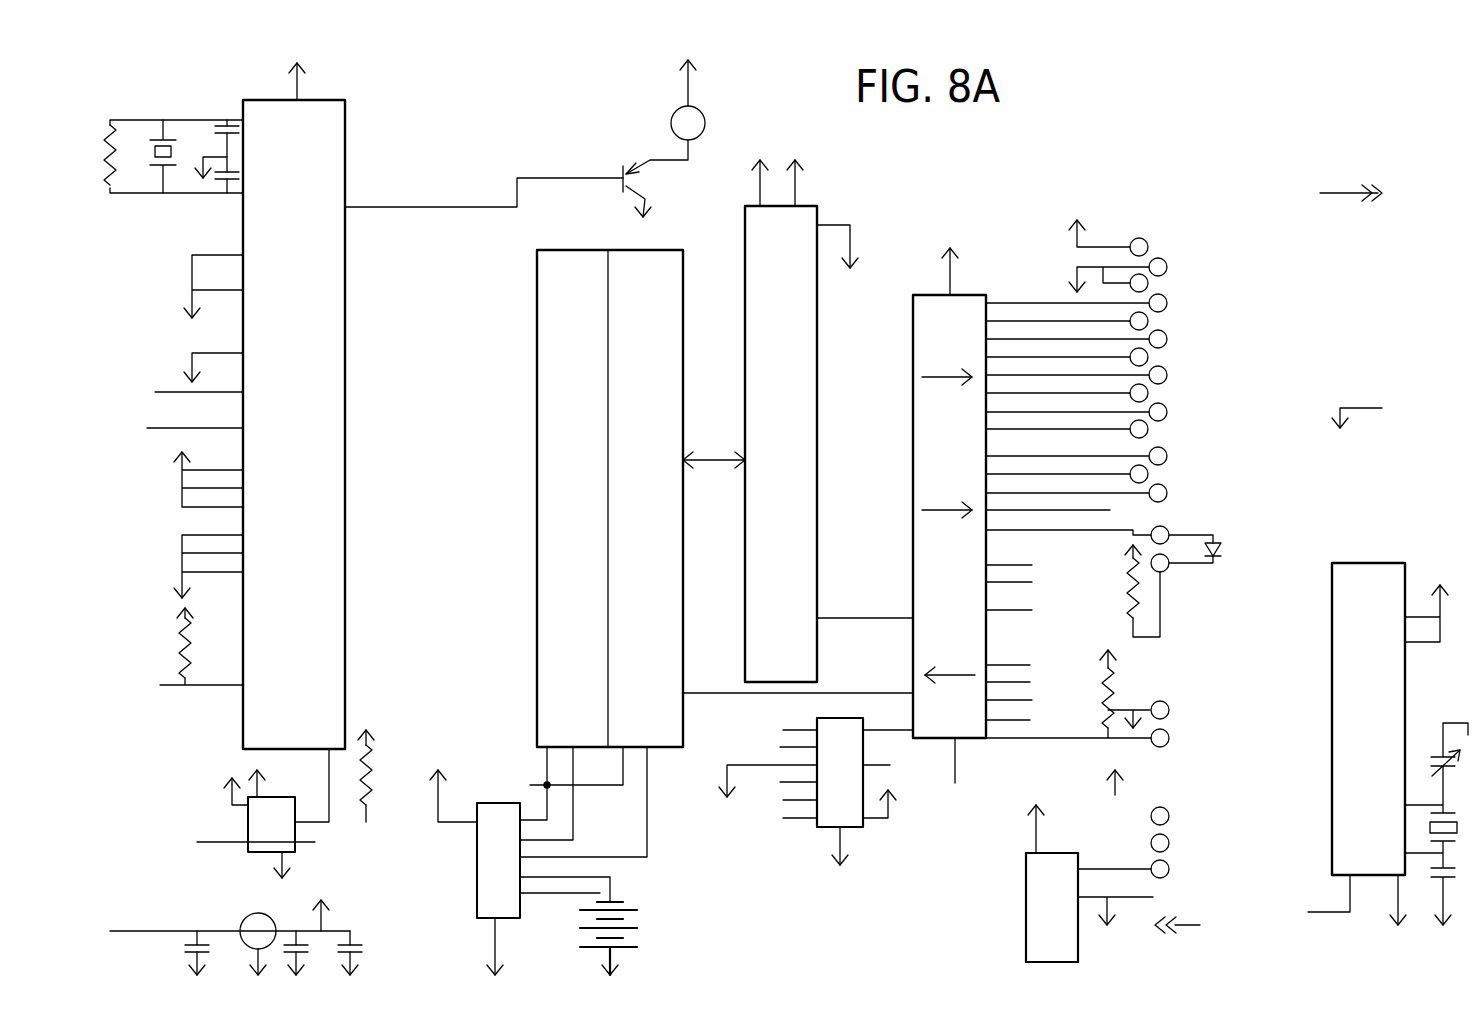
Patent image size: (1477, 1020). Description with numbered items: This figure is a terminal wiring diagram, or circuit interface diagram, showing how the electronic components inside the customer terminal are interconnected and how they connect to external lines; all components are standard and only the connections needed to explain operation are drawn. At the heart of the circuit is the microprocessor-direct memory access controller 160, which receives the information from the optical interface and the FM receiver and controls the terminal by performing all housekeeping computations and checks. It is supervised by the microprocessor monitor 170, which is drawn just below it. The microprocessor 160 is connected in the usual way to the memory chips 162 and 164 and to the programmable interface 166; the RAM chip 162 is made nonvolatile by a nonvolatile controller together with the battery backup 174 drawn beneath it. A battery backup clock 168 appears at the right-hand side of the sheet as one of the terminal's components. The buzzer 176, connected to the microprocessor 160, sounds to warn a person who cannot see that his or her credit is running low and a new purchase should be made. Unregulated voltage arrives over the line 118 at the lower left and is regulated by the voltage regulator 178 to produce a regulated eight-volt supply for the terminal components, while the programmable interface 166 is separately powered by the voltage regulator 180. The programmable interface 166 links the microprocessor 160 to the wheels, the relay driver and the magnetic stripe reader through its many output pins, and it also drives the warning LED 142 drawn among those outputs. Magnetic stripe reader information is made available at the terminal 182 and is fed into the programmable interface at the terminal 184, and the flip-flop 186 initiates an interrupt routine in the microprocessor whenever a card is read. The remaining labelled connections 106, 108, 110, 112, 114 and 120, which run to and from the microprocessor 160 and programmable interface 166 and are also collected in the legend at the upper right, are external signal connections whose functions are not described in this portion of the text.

The signal line 106 is at (160, 685).
The signal line 108 is at (158, 392).
The signal line 110 is at (158, 428).
The signal line 112 is at (1030, 682).
The signal line 114 is at (1030, 665).
The line 118 is at (118, 931).
The signal lines 120 is at (1032, 565).
The warning LED 142 is at (1216, 528).
The microprocessor-direct memory access controller 160 is at (345, 110).
The memory chip 162 is at (563, 268).
The memory chip 164 is at (812, 206).
The programmable interface 166 is at (957, 295).
The battery backup clock 168 is at (1372, 563).
The microprocessor monitor 170 is at (248, 815).
The battery backup 174 is at (642, 926).
The buzzer 176 is at (668, 120).
The voltage regulator 178 is at (277, 913).
The voltage regulator 180 is at (832, 812).
The terminal 182 is at (1169, 816).
The terminal 184 is at (1030, 720).
The flip-flop 186 is at (1025, 906).